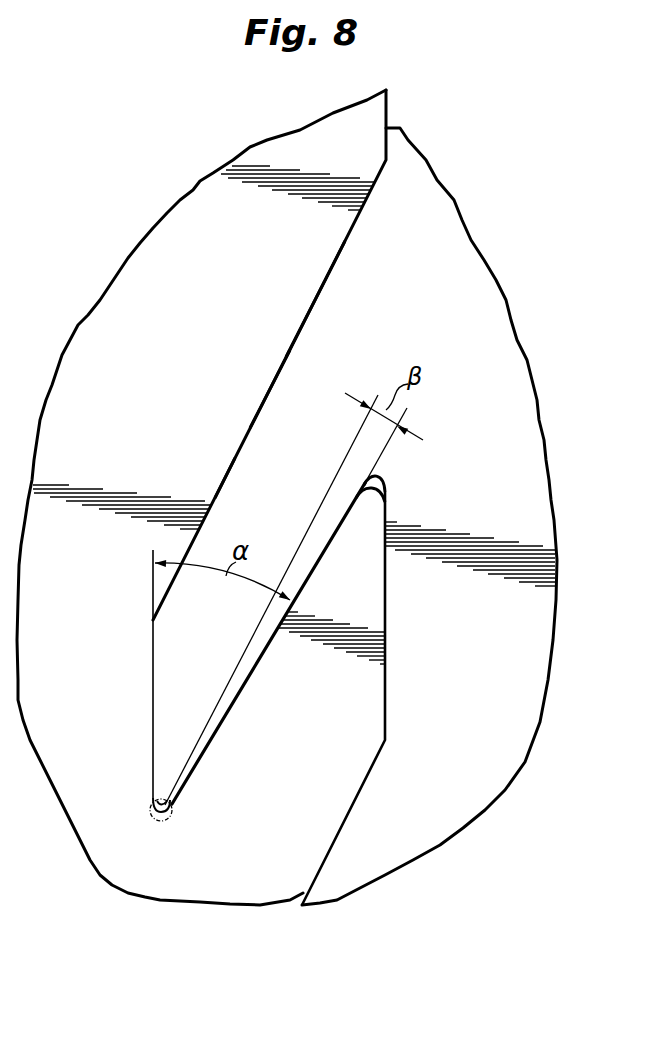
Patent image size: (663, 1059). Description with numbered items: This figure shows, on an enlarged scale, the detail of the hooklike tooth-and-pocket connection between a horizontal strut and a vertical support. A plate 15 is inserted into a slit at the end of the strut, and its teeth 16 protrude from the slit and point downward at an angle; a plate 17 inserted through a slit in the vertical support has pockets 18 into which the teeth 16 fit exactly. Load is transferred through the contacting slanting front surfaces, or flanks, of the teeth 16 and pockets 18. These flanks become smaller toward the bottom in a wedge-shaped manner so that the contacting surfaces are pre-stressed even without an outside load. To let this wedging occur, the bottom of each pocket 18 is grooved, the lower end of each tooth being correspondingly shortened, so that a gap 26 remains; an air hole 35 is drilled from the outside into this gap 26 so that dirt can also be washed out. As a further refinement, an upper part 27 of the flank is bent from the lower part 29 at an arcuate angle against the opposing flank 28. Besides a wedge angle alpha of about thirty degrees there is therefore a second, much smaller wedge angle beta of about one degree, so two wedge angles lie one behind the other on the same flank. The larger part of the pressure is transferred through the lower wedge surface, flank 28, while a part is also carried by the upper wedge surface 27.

The plate 15 is at (363, 222).
The tooth 16 is at (245, 493).
The plate 17 is at (287, 497).
The pocket 18 is at (278, 390).
The gap 26 is at (172, 805).
The upper part of the flank 27 is at (305, 318).
The opposing flank 28 is at (263, 656).
The lower part of the flank 29 is at (148, 690).
The air hole 35 is at (150, 808).